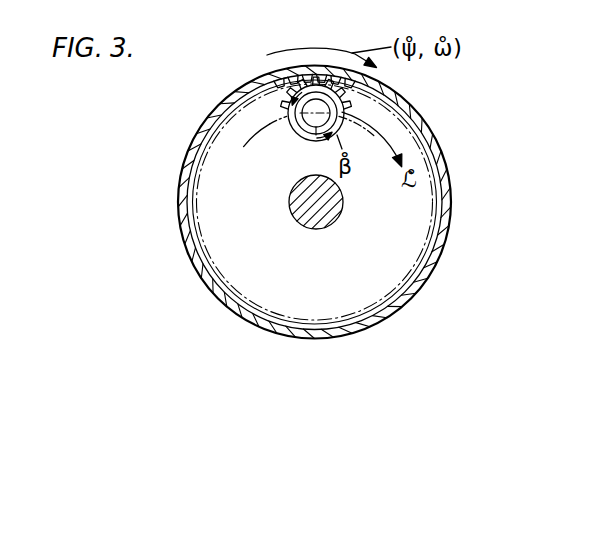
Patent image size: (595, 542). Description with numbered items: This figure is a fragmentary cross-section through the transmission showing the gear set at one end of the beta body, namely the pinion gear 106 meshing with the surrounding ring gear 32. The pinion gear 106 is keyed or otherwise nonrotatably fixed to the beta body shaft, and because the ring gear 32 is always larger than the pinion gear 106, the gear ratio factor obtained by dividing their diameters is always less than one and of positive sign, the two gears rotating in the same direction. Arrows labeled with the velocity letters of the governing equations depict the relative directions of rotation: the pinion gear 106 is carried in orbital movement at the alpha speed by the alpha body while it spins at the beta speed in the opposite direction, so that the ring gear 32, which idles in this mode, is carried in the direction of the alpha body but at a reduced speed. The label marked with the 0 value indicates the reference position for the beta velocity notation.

The ring gear 32 is at (450, 184).
The pinion gear 106 is at (302, 132).
The zero angular position reference (L=0) 0 is at (296, 78).